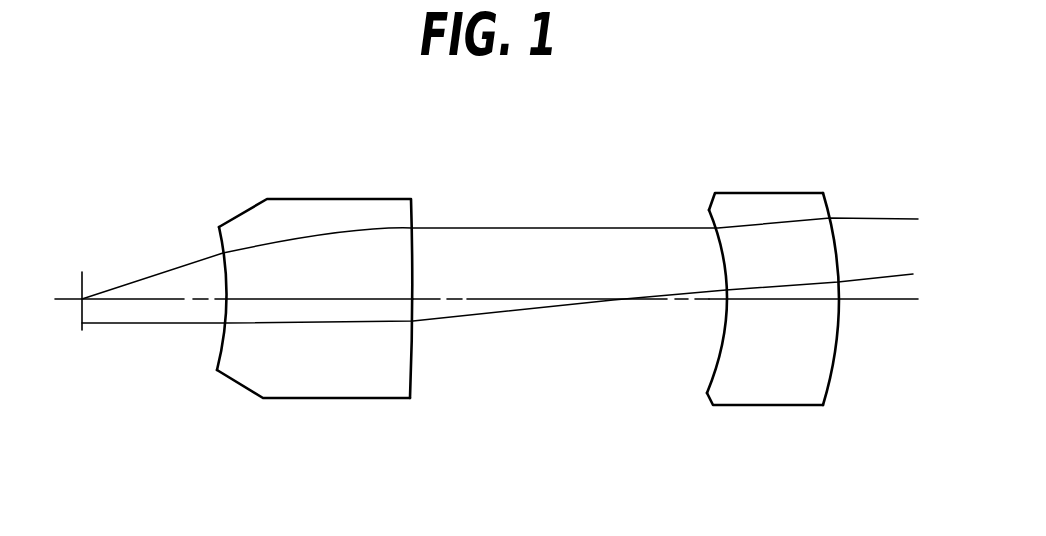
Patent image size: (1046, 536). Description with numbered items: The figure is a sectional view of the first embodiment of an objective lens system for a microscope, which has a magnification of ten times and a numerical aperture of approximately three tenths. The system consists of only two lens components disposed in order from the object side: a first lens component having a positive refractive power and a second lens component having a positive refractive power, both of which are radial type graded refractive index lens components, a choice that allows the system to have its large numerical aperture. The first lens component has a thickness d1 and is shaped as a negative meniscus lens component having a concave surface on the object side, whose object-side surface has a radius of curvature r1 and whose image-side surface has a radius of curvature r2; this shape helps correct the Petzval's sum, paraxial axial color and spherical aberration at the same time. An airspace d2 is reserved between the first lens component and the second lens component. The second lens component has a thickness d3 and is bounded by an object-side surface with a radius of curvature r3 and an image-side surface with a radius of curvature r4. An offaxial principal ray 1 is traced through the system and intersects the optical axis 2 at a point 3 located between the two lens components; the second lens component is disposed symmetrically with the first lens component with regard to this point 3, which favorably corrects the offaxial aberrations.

The offaxial principal ray 1 is at (177, 327).
The optical axis 2 is at (127, 297).
The point 3 is at (624, 300).
The radius of curvature of object-side surface of first lens component r1 is at (217, 240).
The radius of curvature of image-side surface of first lens component r2 is at (413, 217).
The radius of curvature of object-side surface of second lens component r3 is at (710, 217).
The radius of curvature of image-side surface of second lens component r4 is at (830, 210).
The thickness of first lens component d1 is at (312, 300).
The airspace between first and second lens components d2 is at (545, 300).
The thickness of second lens component d3 is at (773, 302).